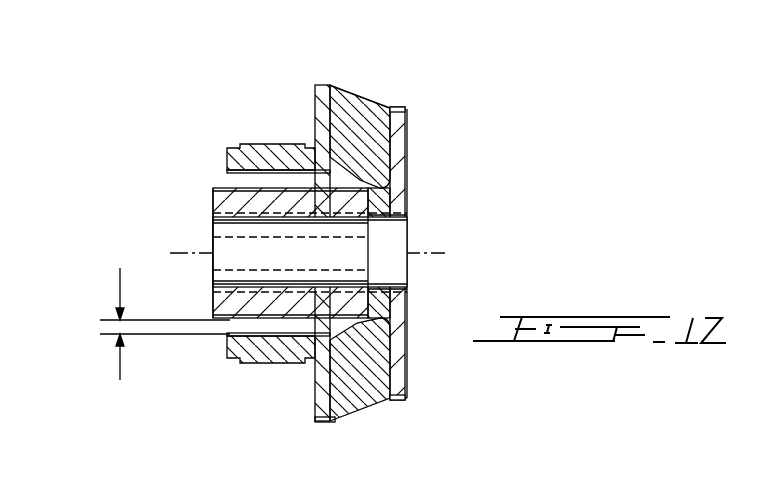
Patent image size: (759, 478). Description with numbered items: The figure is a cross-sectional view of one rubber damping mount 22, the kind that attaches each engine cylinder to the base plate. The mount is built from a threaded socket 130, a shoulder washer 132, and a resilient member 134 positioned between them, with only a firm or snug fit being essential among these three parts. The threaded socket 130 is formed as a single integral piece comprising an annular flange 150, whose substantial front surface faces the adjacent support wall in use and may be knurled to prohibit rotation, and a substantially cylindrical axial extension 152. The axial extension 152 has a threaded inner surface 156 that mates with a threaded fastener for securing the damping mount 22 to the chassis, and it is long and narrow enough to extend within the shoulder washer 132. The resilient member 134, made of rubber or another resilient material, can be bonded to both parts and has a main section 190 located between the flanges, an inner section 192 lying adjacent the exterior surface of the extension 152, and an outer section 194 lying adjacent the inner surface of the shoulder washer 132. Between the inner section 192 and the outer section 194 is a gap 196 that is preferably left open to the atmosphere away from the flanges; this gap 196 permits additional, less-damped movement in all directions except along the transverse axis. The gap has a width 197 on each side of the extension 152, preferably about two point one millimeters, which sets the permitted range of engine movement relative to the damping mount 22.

The damping mount 22 is at (443, 122).
The threaded socket 130 is at (407, 167).
The shoulder washer 132 is at (315, 96).
The resilient member 134 is at (362, 107).
The flange 150 is at (407, 387).
The axial extension 152 is at (290, 300).
The threaded inner surface 156 is at (215, 240).
The main section 190 is at (373, 92).
The inner section 192 is at (215, 187).
The outer section 194 is at (227, 163).
The gap 196 is at (273, 180).
The width 197 is at (138, 324).